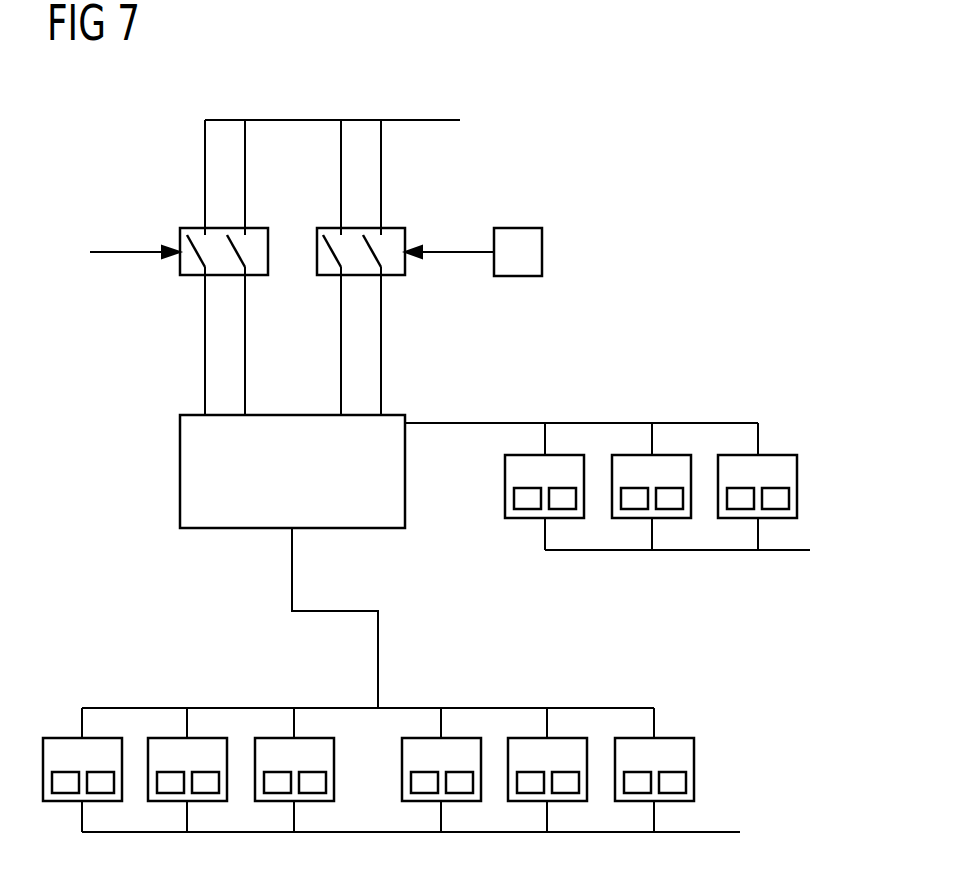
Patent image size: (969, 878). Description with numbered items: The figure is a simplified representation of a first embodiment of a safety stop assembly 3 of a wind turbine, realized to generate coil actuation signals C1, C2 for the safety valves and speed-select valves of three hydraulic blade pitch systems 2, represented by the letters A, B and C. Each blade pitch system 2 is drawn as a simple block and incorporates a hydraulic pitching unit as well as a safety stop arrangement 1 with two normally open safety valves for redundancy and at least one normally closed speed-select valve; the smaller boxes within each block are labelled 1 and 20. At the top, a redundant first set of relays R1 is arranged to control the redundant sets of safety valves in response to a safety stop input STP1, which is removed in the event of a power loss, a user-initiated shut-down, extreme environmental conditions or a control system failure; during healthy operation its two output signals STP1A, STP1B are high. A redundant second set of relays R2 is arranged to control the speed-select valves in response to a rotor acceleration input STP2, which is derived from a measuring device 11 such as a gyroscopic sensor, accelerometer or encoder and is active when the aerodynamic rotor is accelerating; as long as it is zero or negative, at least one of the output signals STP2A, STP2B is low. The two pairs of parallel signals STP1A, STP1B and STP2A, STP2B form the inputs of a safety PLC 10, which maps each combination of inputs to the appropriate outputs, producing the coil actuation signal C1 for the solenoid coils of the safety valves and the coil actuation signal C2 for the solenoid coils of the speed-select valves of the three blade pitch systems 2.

The safety stop assembly 3 is at (650, 132).
The safety PLC 10 is at (180, 470).
The measuring device 11 is at (519, 228).
The hydraulic blade pitch system 2 is at (567, 455).
The safety stop arrangement 1 is at (530, 518).
The second light source 20 is at (563, 518).
The first set of relays R1 is at (256, 227).
The second set of relays R2 is at (328, 278).
The safety stop input STP1 is at (110, 250).
The rotor acceleration input STP2 is at (450, 250).
The first output signal of relay R1 STP1A is at (205, 310).
The second output signal of relay R1 STP1B is at (245, 365).
The first output signal of relay R2 STP2A is at (342, 317).
The second output signal of relay R2 STP2B is at (382, 360).
The coil actuation signal C1 is at (292, 585).
The coil actuation signal C2 is at (458, 425).